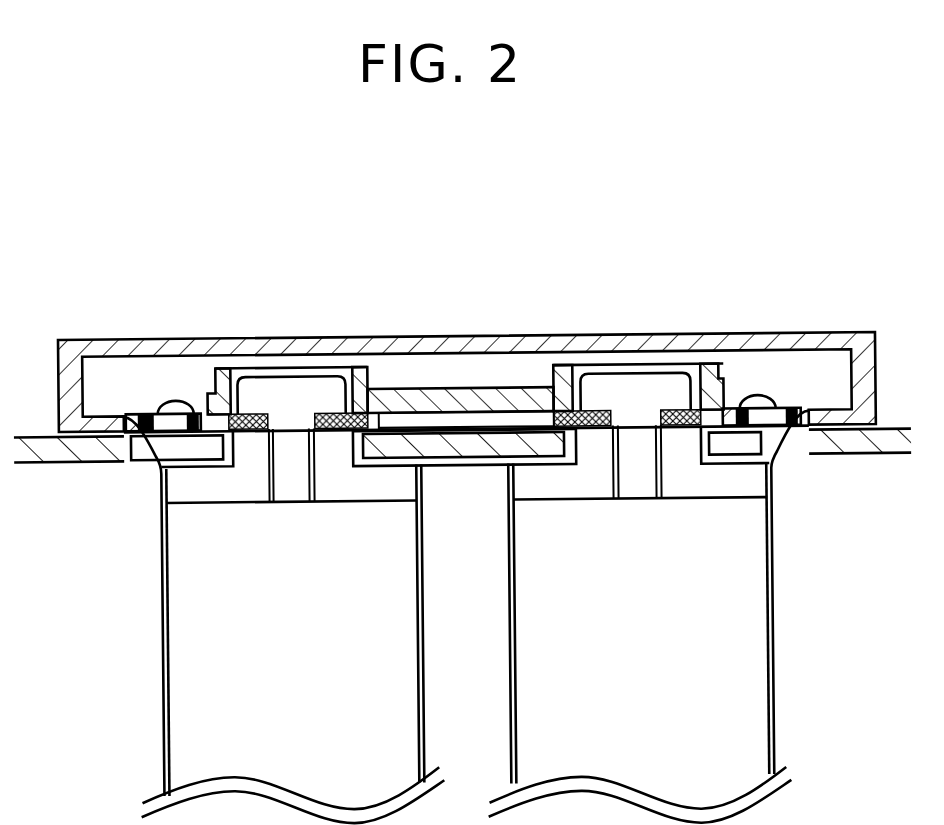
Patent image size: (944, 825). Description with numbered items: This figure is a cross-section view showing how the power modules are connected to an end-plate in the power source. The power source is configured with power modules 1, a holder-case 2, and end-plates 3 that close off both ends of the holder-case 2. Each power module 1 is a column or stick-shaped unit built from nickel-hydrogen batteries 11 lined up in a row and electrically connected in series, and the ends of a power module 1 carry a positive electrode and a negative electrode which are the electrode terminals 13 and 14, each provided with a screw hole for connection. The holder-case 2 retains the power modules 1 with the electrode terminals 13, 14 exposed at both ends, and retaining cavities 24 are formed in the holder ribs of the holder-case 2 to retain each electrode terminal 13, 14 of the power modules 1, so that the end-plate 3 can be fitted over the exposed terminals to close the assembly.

The power module 1 is at (466, 551).
The holder-case 2 is at (47, 448).
The end-plate 3 is at (52, 368).
The nickel-hydrogen battery 11 is at (177, 716).
The electrode terminal 13 is at (718, 490).
The electrode terminal 14 is at (170, 480).
The retaining cavity 24 is at (543, 446).